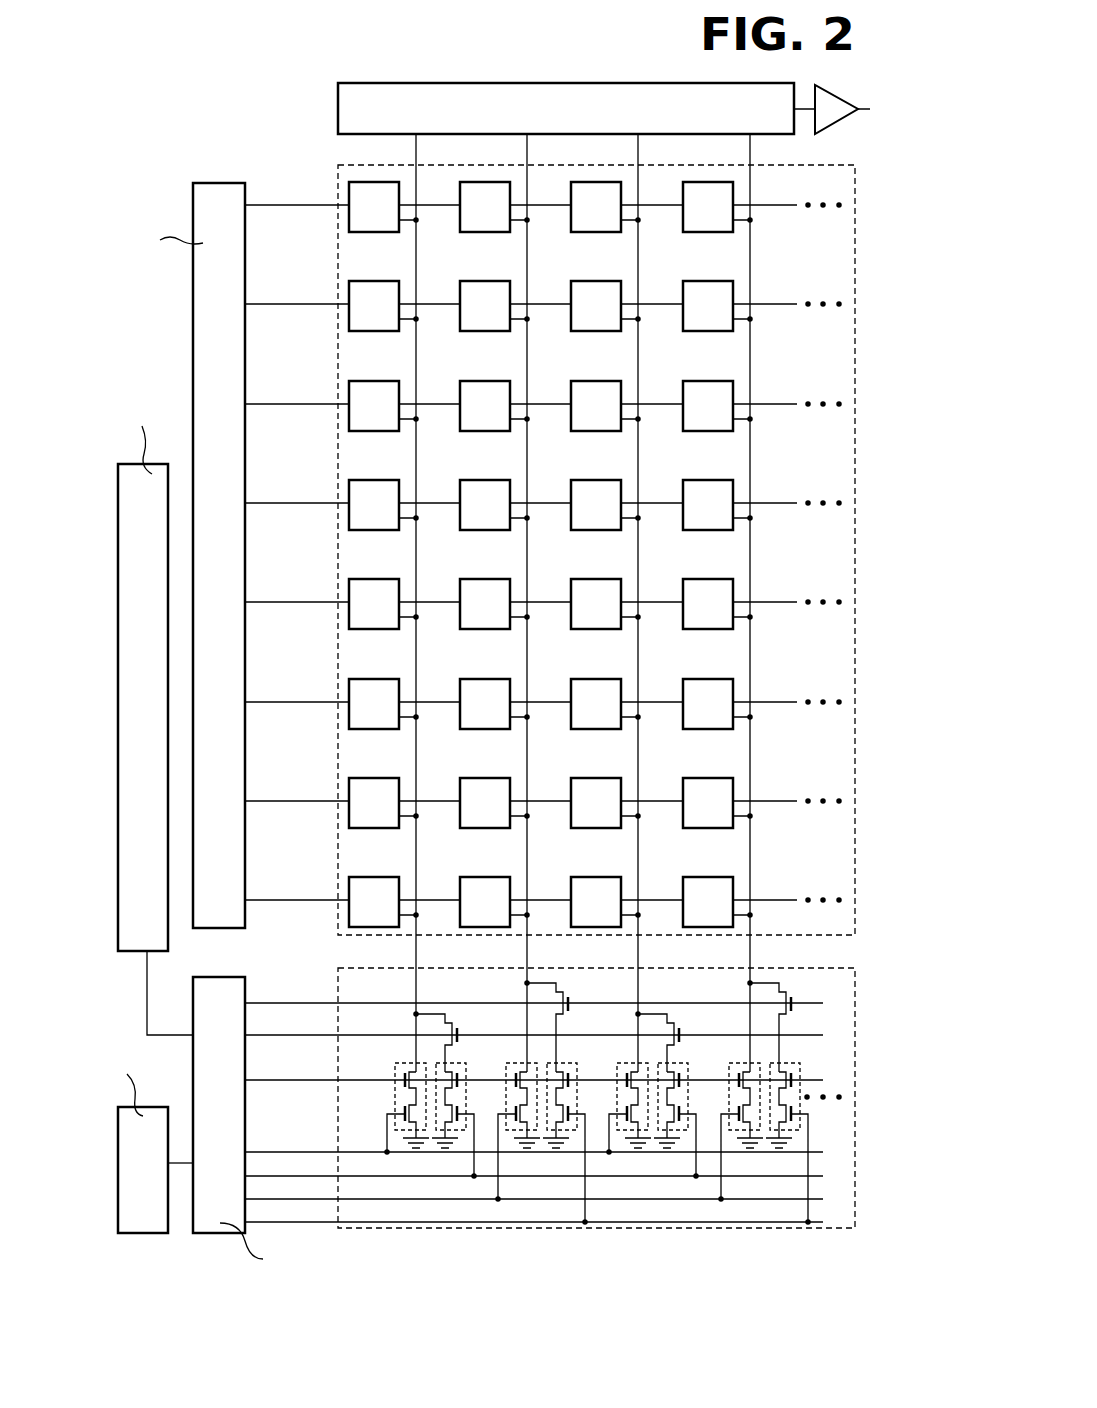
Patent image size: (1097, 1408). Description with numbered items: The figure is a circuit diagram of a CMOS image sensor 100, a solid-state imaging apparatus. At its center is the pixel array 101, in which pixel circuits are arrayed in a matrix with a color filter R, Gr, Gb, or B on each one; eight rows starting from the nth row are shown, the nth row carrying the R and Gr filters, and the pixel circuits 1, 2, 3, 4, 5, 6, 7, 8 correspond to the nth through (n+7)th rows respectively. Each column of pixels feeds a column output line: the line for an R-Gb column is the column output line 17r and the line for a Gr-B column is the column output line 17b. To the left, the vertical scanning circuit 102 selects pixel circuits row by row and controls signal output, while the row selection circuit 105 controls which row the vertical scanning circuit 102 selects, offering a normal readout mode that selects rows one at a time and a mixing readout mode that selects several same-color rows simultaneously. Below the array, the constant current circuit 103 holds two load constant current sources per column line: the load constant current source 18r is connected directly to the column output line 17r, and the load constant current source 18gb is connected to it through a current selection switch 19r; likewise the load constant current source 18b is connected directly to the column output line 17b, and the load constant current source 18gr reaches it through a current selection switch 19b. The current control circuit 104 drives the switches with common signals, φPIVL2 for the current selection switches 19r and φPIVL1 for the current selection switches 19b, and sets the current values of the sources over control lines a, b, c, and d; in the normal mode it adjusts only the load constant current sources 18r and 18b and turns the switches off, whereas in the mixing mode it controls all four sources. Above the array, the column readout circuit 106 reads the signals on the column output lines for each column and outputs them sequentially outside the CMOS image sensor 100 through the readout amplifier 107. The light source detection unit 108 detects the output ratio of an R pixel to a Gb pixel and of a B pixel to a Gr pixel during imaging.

The CMOS image sensor 100 is at (207, 103).
The pixel array 101 is at (337, 173).
The vertical scanning circuit 102 is at (219, 555).
The constant current circuit 103 is at (336, 1117).
The current control circuit 104 is at (219, 1105).
The row selection circuit 105 is at (155, 749).
The column readout circuit 106 is at (339, 109).
The readout amplifier 107 is at (838, 128).
The light source detection unit 108 is at (155, 1170).
The pixel circuit 1 is at (384, 233).
The pixel circuit 2 is at (384, 332).
The pixel circuit 3 is at (384, 432).
The pixel circuit 4 is at (384, 531).
The pixel circuit 5 is at (384, 630).
The pixel circuit 6 is at (384, 730).
The pixel circuit 7 is at (395, 829).
The pixel circuit 8 is at (350, 877).
The column output line 17r is at (418, 955).
The column output line 17b is at (529, 955).
The load constant current source 18r is at (395, 1069).
The load constant current source 18gb is at (468, 1068).
The load constant current source 18b is at (505, 1072).
The load constant current source 18gr is at (578, 1072).
The current selection switch 19r is at (446, 1020).
The current selection switch 19b is at (559, 1005).